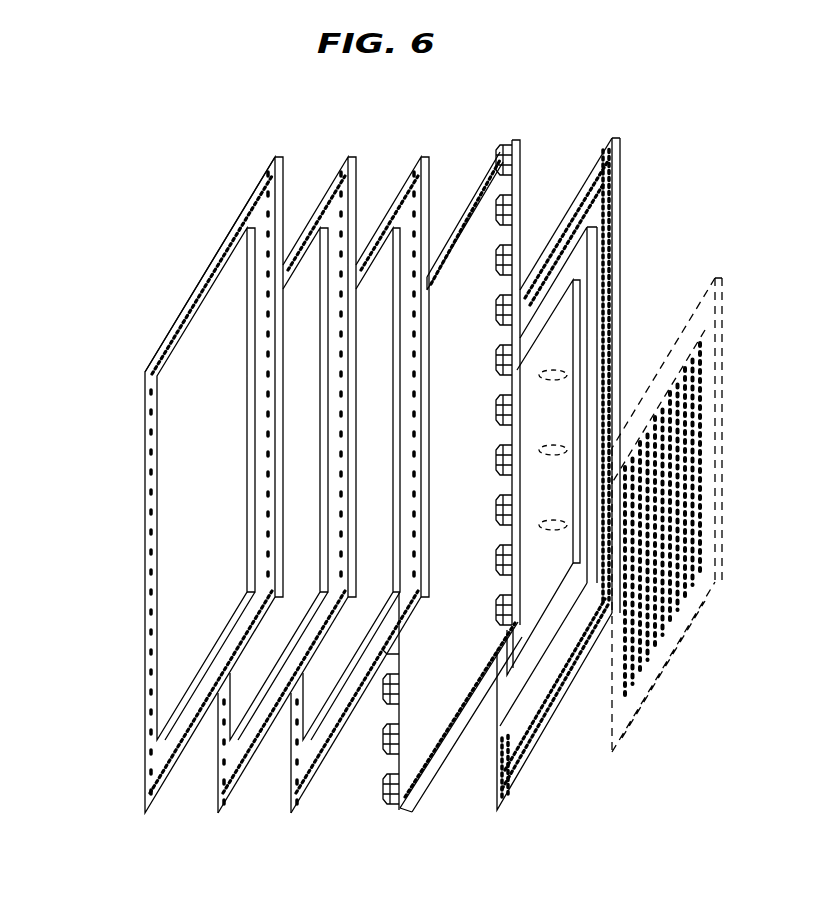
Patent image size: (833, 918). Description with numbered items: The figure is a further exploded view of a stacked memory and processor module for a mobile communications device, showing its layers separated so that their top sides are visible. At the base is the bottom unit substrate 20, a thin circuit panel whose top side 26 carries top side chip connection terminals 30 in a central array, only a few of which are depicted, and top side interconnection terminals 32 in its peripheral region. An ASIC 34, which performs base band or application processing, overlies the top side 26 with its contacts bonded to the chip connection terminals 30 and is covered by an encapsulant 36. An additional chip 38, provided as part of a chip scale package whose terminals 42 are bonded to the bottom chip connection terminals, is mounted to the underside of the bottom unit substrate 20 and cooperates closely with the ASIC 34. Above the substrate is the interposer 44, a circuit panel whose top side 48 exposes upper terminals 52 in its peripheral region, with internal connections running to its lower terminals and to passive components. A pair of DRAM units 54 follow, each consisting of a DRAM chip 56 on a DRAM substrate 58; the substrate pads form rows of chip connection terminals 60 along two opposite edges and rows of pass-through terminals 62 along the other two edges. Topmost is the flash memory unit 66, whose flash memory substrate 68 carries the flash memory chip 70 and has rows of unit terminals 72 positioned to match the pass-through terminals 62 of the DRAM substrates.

The bottom unit substrate 20 is at (598, 492).
The top side 26 is at (600, 215).
The top side chip connection terminals 30 is at (553, 382).
The top side interconnection terminals 32 is at (612, 298).
The ASIC 34 is at (537, 593).
The encapsulant 36 is at (505, 692).
The additional chip 38 is at (704, 515).
The terminals 42 is at (693, 522).
The interposer 44 is at (477, 442).
The top side 48 is at (465, 201).
The upper terminals 52 is at (490, 222).
The DRAM unit 54 is at (297, 482).
The DRAM chip 56 is at (216, 748).
The DRAM substrate 58 is at (225, 808).
The chip connection terminals 60 is at (365, 248).
The pass-through terminals 62 is at (412, 566).
The flash memory unit 66 is at (189, 470).
The flash memory substrate 68 is at (268, 182).
The flash memory chip 70 is at (208, 492).
The unit terminals 72 is at (190, 322).